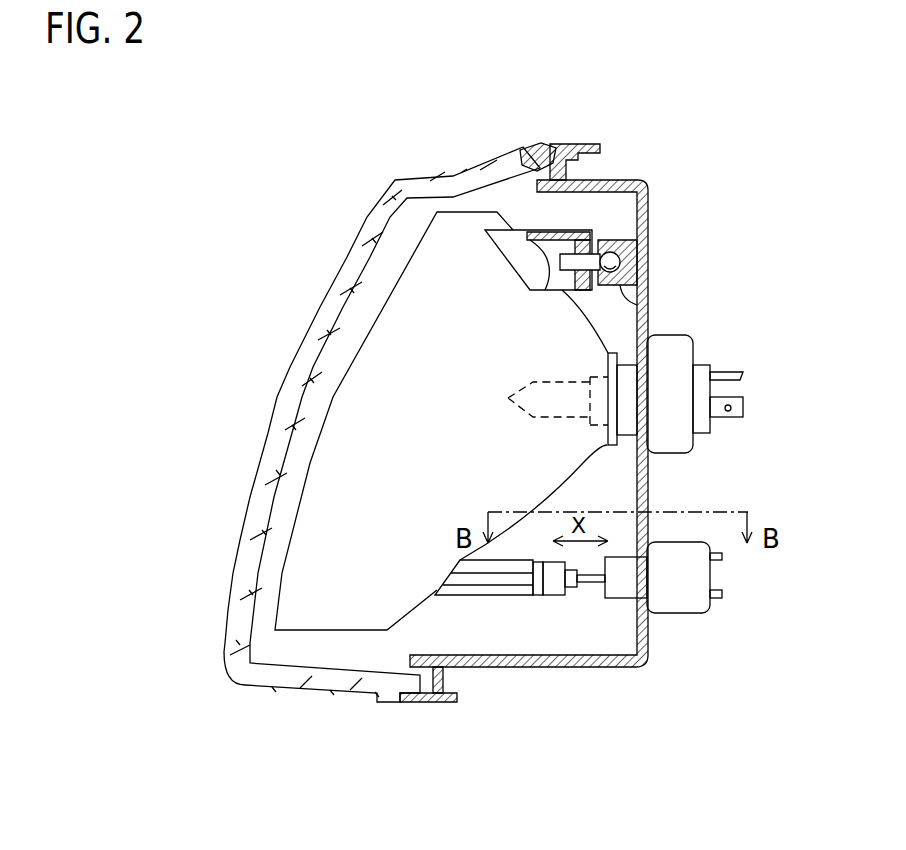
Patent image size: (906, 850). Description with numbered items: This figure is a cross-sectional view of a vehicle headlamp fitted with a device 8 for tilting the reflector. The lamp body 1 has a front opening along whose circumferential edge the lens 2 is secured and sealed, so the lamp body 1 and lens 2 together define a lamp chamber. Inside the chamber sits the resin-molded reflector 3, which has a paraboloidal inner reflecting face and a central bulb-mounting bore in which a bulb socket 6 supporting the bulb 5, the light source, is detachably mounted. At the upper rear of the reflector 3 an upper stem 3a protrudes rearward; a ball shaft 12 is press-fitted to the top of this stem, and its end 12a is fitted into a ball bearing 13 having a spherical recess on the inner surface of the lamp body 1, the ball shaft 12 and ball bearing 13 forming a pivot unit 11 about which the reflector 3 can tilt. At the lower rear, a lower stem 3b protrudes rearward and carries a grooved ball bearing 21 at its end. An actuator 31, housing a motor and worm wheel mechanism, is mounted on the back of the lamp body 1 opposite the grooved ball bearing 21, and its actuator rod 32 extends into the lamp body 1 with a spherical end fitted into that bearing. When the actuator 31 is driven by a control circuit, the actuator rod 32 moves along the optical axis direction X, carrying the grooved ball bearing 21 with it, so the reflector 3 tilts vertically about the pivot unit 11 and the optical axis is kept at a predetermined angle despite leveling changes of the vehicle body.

The lamp body 1 is at (652, 184).
The lens 2 is at (368, 216).
The reflector 3 is at (322, 497).
The upper stem 3a is at (537, 230).
The lower stem 3b is at (500, 600).
The bulb 5 is at (540, 393).
The bulb socket 6 is at (622, 390).
The device for tilting reflector 8 is at (786, 612).
The pivot unit 11 is at (674, 238).
The ball shaft 12 is at (606, 250).
The end of the ball shaft 12a is at (620, 252).
The ball bearing 13 is at (640, 305).
The grooved ball bearing 21 is at (558, 605).
The actuator 31 is at (692, 603).
The actuator rod 32 is at (590, 598).